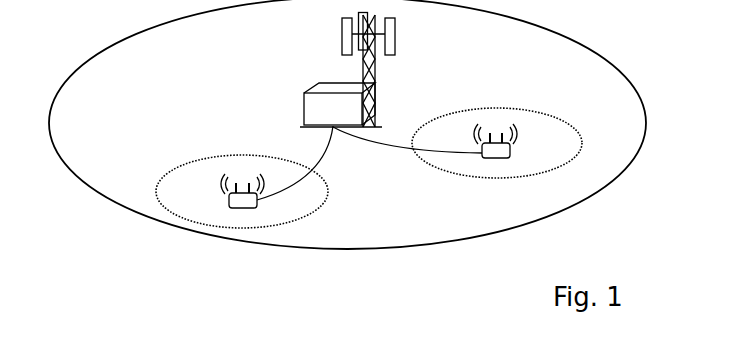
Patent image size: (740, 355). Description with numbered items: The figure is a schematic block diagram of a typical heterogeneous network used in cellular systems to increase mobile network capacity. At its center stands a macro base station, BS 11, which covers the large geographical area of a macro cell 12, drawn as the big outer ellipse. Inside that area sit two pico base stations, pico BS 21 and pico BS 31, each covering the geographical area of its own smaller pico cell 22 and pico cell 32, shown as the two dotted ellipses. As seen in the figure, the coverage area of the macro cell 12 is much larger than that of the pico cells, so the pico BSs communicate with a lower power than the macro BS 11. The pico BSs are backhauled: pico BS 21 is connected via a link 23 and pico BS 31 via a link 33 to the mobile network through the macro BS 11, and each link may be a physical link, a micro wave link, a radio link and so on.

The macro base station 11 is at (304, 93).
The macro cell 12 is at (569, 210).
The pico base station 21 is at (226, 174).
The pico cell 22 is at (201, 220).
The link 23 is at (332, 147).
The pico base station 31 is at (498, 127).
The pico cell 32 is at (474, 179).
The link 33 is at (386, 147).